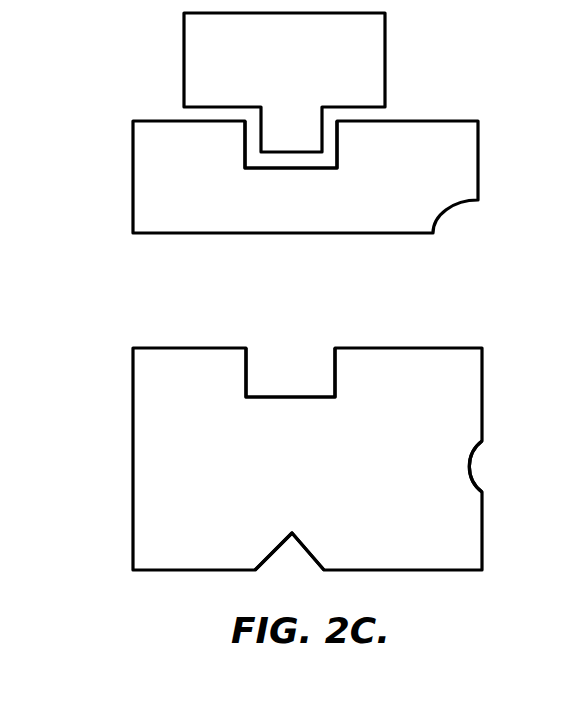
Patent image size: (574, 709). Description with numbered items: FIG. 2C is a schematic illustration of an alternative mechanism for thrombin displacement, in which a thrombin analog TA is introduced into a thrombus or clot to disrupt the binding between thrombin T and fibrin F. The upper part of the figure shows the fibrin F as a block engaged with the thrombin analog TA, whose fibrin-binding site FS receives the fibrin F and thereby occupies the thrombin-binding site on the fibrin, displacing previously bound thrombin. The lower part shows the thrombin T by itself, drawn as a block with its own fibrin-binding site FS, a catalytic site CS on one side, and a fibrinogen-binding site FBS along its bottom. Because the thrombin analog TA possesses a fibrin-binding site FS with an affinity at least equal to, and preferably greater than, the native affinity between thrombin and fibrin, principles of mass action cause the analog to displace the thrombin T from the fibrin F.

The fibrin F is at (301, 74).
The thrombin analog TA is at (162, 183).
The fibrin-binding site FS is at (337, 140).
The thrombin T is at (302, 478).
The catalytic site CS is at (432, 458).
The fibrinogen-binding site FBS is at (272, 550).